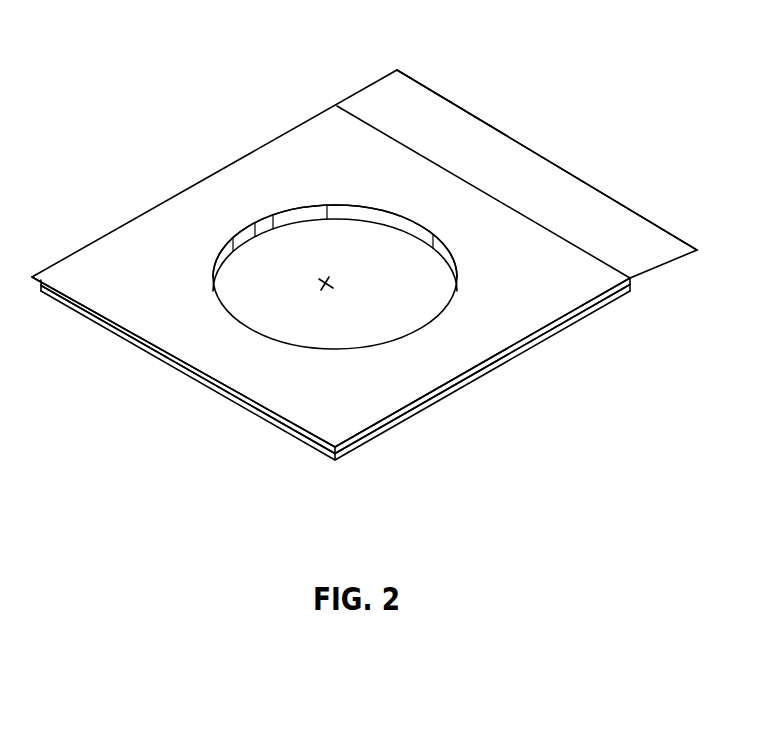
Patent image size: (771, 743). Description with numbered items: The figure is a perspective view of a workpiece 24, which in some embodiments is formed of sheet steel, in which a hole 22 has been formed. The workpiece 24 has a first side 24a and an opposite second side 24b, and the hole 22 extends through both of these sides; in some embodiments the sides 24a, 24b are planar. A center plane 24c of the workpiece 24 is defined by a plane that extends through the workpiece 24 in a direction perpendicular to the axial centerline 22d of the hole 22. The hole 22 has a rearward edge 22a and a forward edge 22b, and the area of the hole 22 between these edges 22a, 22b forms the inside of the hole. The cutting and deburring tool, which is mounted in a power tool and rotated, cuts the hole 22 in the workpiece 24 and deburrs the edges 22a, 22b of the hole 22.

The hole 22 is at (300, 252).
The rearward edge of the hole 22a is at (240, 257).
The forward edge of the hole 22b is at (312, 207).
The axial centerline of the hole 22d is at (323, 287).
The workpiece 24 is at (302, 402).
The first side of the workpiece 24a is at (390, 437).
The second side of the workpiece 24b is at (518, 302).
The center plane of the workpiece 24c is at (577, 210).